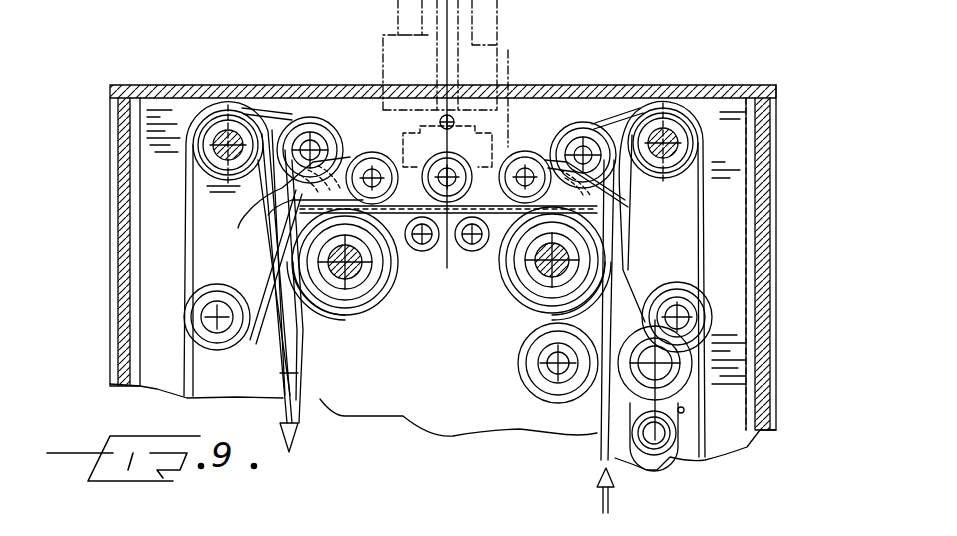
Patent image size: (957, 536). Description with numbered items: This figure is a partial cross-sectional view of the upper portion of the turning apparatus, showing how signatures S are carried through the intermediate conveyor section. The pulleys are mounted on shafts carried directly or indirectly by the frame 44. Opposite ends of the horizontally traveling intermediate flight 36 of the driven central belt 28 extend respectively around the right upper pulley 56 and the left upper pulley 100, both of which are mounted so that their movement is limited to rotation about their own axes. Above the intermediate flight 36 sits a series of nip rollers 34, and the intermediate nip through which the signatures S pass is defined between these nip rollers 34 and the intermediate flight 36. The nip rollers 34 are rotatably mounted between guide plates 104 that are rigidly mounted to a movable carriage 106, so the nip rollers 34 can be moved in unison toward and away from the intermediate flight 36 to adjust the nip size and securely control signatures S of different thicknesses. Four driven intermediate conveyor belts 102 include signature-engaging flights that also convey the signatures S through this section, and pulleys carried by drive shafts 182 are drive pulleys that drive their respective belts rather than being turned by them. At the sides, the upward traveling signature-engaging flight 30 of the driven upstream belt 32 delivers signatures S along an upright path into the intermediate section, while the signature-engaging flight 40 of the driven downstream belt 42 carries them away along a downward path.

The frame 44 is at (131, 80).
The driven downstream belt 42 is at (172, 359).
The driven upstream belt 32 is at (712, 428).
The signature-engaging flight 30 is at (630, 463).
The movable carriage 106 is at (503, 42).
The driven intermediate conveyor belts 102 is at (270, 105).
The drive shafts 182 is at (668, 138).
The nip rollers 34 is at (363, 150).
The left upper pulley 100 is at (375, 290).
The right upper pulley 56 is at (524, 290).
The intermediate flight 36 is at (455, 222).
The guide plates 104 is at (272, 244).
The signature-engaging flight 40 is at (280, 373).
The driven central belt 28 is at (308, 394).
The signatures S is at (303, 360).